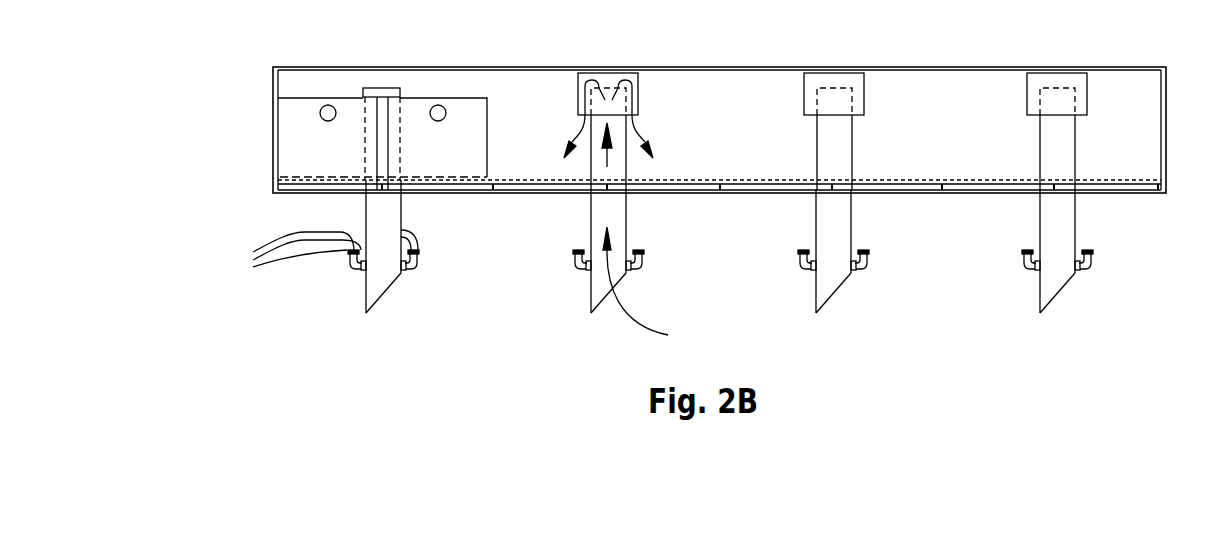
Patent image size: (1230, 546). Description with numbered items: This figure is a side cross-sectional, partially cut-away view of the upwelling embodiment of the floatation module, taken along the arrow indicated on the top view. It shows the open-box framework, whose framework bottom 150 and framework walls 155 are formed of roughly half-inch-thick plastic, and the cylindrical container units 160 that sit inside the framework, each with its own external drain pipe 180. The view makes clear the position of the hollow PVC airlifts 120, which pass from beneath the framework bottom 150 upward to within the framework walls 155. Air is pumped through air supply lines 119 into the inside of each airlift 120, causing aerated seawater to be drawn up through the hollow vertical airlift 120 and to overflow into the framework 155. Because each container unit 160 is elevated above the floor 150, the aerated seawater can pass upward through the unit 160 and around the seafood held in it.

The air supply lines 119 is at (322, 258).
The PVC airlift 120 is at (387, 275).
The framework bottom 150 is at (1113, 185).
The framework walls 155 is at (1158, 85).
The cylindrical container unit 160 is at (285, 112).
The external drain pipe 180 is at (432, 104).